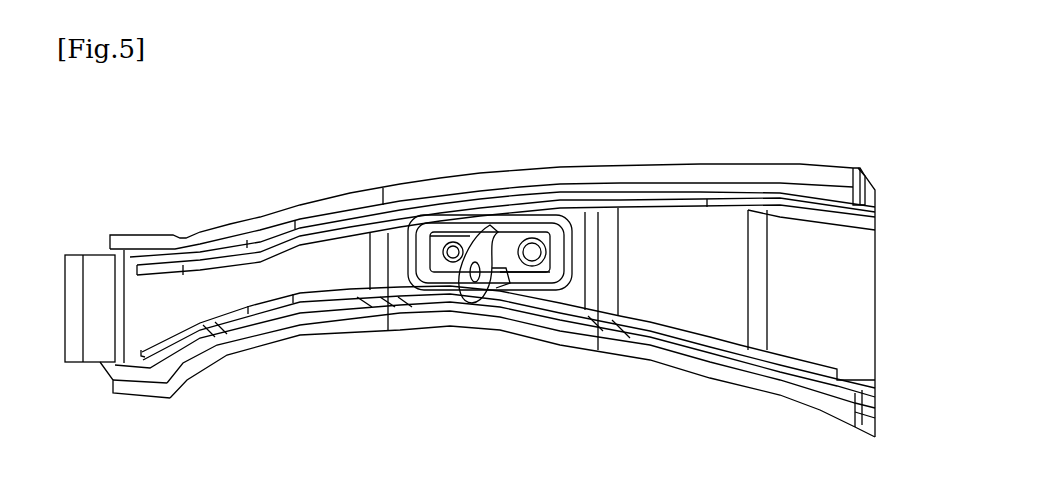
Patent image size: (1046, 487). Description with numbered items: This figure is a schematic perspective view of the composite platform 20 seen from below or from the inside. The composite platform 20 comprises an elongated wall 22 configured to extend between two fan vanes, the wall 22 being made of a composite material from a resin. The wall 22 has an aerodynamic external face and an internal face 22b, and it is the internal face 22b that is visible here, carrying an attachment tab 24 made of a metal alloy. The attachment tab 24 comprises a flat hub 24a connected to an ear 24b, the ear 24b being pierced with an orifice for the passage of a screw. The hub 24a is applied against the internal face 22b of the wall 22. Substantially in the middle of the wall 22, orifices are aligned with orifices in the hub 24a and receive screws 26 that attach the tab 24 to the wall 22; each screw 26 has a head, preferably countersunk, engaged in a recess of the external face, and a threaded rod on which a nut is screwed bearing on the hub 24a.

The composite platform 20 is at (836, 116).
The elongated wall 22 is at (877, 305).
The internal face 22b is at (684, 228).
The attachment tab 24 is at (512, 286).
The hub 24a is at (525, 222).
The ear 24b is at (468, 302).
The screws 26 is at (456, 246).